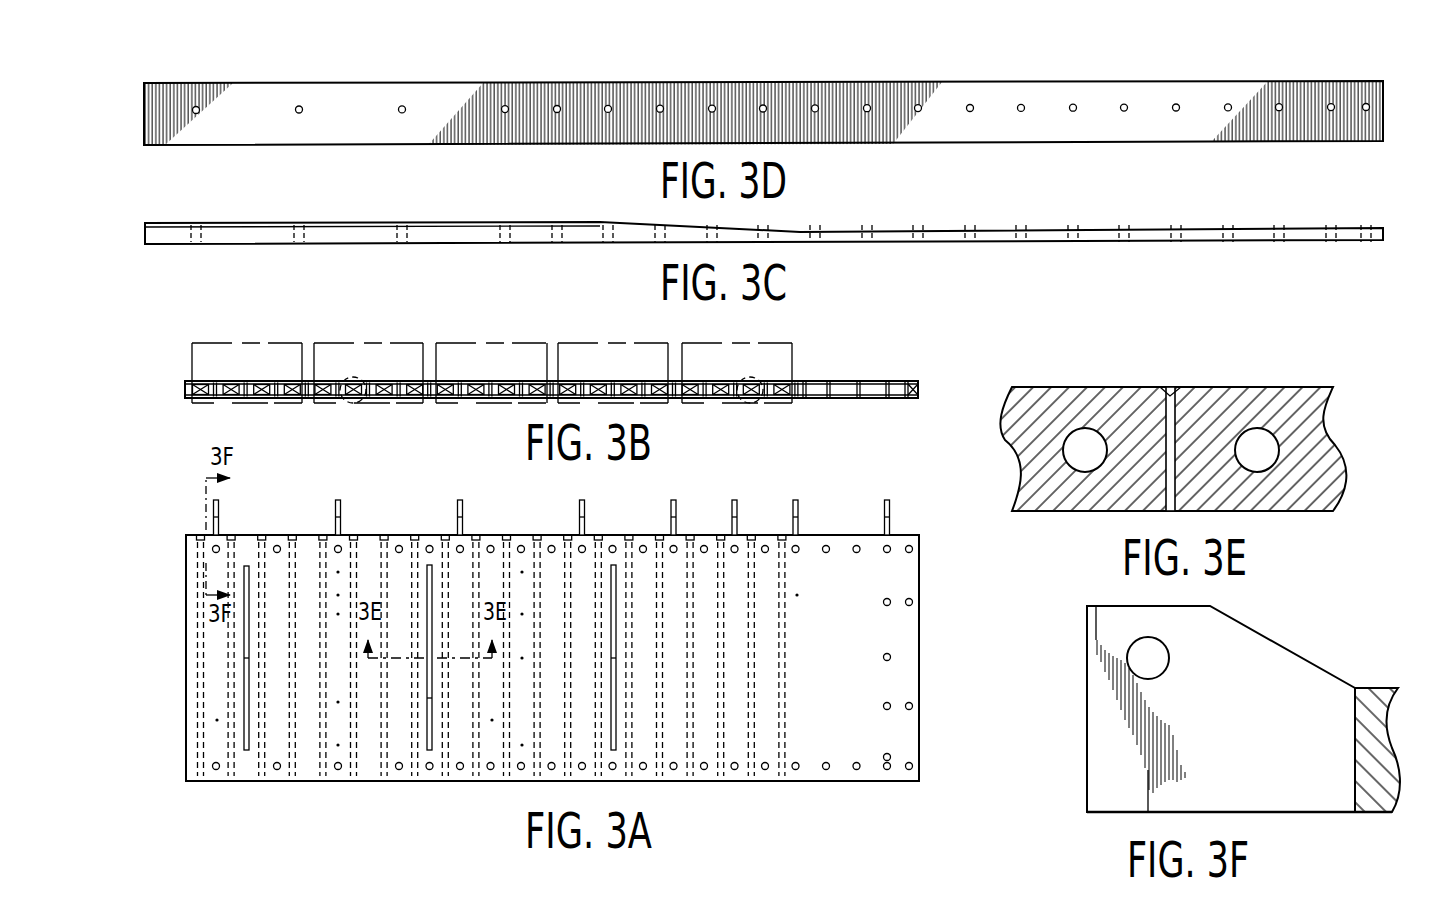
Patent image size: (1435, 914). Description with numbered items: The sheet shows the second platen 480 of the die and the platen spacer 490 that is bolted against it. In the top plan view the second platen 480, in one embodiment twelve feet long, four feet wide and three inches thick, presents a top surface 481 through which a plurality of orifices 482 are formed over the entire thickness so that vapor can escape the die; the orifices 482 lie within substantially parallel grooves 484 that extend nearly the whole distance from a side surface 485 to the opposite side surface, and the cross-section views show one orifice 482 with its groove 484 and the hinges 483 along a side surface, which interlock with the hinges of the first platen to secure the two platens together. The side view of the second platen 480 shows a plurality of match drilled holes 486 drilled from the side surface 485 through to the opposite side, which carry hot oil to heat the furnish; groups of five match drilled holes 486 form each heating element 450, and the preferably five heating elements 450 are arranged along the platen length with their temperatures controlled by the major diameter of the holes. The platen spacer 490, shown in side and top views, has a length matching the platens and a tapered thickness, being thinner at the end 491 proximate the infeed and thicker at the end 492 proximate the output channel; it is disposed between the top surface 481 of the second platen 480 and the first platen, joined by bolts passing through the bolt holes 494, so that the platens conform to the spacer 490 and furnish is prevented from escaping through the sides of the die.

In FIG. 3B, the heating element 450 is at (242, 342).
In FIG. 3B, the second platen 480 is at (938, 366).
In FIG. 3A, the second platen 480 is at (915, 510).
In FIG. 3F, the second platen 480 is at (1380, 700).
In FIG. 3A, the top surface 481 is at (878, 624).
In FIG. 3E, the top surface 481 is at (1255, 387).
In FIG. 3F, the top surface 481 is at (1370, 813).
In FIG. 3A, the orifice 482 is at (340, 657).
In FIG. 3E, the orifice 482 is at (1178, 395).
In FIG. 3F, the hinge 483 is at (1105, 783).
In FIG. 3E, the groove 484 is at (1170, 394).
In FIG. 3B, the side surface 485 is at (877, 385).
In FIG. 3B, the match drilled hole 486 is at (350, 402).
In FIG. 3A, the match drilled hole 486 is at (263, 536).
In FIG. 3E, the match drilled hole 486 is at (1085, 443).
In FIG. 3D, the platen spacer 490 is at (1194, 73).
In FIG. 3C, the platen spacer 490 is at (1296, 214).
In FIG. 3D, the end 491 is at (1383, 101).
In FIG. 3C, the end 491 is at (1383, 229).
In FIG. 3D, the end 492 is at (144, 109).
In FIG. 3C, the end 492 is at (145, 230).
In FIG. 3D, the bolt hole 494 is at (299, 105).
In FIG. 3A, the bolt hole 494 is at (767, 544).